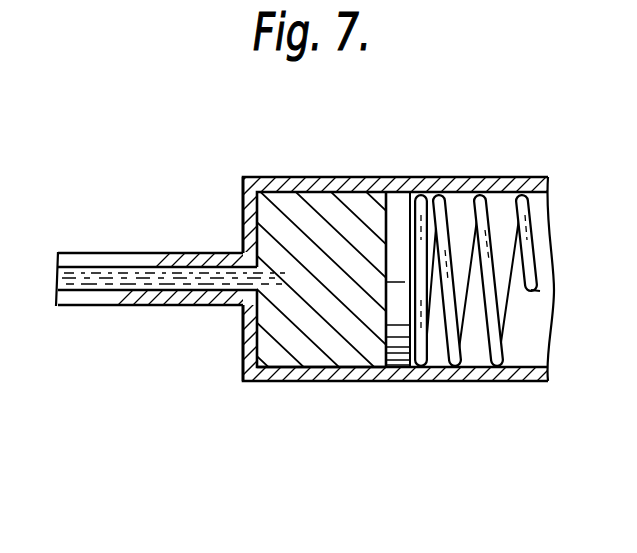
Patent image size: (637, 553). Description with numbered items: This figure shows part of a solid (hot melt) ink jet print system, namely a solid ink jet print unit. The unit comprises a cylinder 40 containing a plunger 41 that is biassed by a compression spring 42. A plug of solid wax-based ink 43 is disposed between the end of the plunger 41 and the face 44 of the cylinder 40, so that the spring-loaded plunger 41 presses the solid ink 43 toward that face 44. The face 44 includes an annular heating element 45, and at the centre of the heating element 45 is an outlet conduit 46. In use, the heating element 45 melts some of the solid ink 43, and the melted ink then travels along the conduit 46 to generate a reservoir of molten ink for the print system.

The cylinder 40 is at (368, 178).
The plunger 41 is at (398, 207).
The compression spring 42 is at (506, 372).
The plug of solid wax-based ink 43 is at (354, 360).
The face 44 is at (249, 239).
The annular heating element 45 is at (274, 211).
The outlet conduit 46 is at (117, 254).